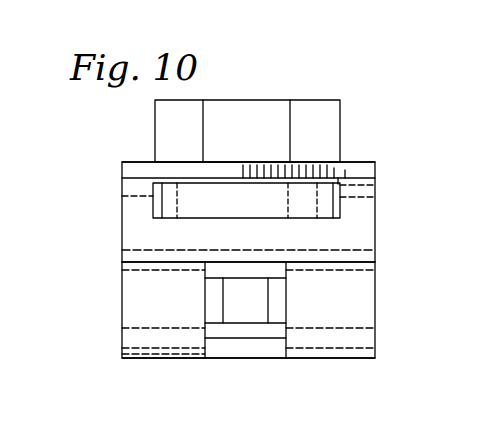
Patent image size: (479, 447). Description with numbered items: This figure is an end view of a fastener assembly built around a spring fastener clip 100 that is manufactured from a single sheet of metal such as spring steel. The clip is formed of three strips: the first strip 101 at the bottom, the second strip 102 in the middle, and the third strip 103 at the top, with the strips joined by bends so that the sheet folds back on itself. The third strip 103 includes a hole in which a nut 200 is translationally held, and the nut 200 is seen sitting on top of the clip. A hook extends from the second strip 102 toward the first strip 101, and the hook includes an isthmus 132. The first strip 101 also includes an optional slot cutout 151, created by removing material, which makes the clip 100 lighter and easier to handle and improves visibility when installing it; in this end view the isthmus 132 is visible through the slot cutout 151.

The spring fastener clip 100 is at (396, 151).
The nut 200 is at (323, 84).
The third strip 103 is at (138, 163).
The second strip 102 is at (145, 262).
The first strip 101 is at (317, 358).
The slot cutout 151 is at (287, 360).
The isthmus 132 is at (236, 310).